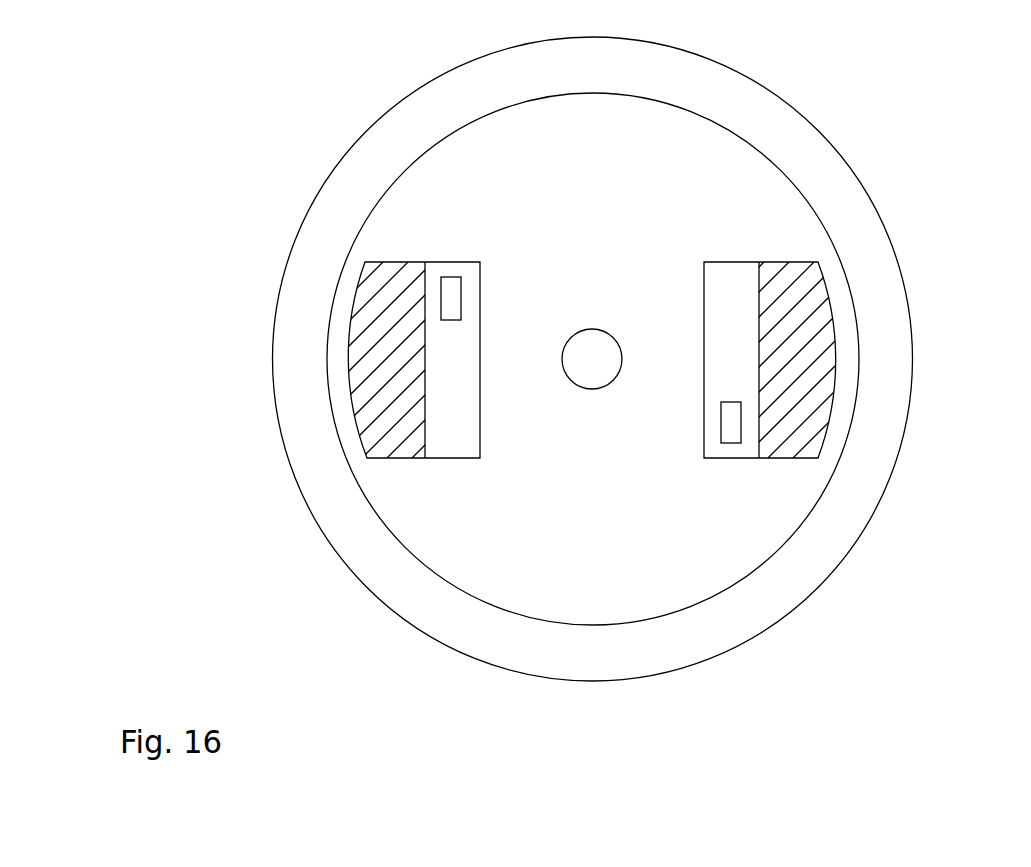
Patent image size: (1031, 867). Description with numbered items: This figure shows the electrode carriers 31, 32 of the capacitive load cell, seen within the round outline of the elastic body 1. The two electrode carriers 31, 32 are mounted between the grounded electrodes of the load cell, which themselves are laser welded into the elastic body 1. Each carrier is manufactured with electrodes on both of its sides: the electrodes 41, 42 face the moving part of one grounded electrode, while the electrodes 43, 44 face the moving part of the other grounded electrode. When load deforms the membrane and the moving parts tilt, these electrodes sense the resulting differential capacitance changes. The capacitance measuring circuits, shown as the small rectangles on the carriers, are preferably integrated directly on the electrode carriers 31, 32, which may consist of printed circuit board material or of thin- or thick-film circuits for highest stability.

The elastic body 1 is at (880, 327).
The electrode carrier 31 is at (385, 355).
The electrode carrier 32 is at (787, 355).
The electrode 41 is at (787, 316).
The electrode 42 is at (385, 316).
The electrode 43 is at (770, 268).
The electrode 44 is at (390, 272).